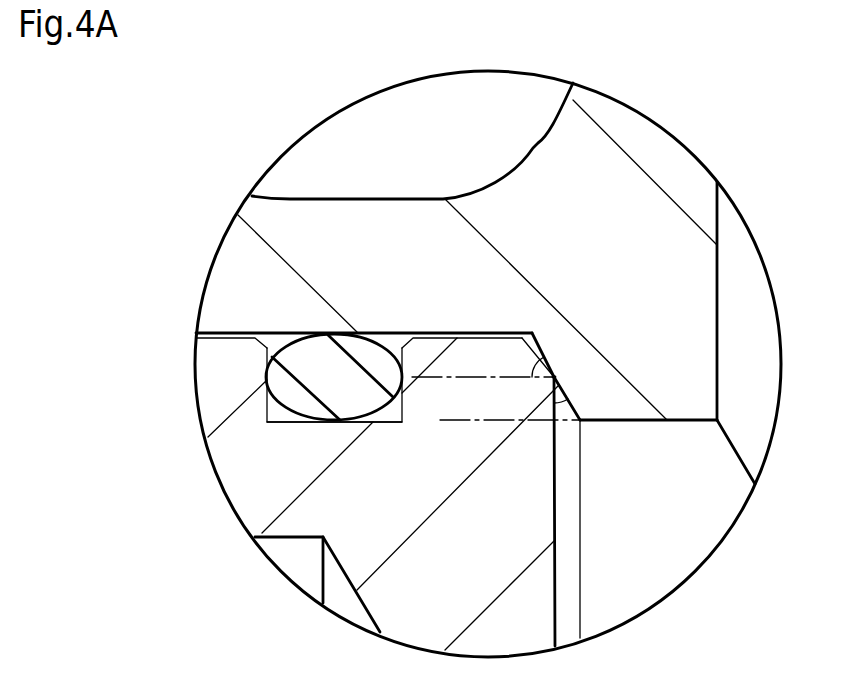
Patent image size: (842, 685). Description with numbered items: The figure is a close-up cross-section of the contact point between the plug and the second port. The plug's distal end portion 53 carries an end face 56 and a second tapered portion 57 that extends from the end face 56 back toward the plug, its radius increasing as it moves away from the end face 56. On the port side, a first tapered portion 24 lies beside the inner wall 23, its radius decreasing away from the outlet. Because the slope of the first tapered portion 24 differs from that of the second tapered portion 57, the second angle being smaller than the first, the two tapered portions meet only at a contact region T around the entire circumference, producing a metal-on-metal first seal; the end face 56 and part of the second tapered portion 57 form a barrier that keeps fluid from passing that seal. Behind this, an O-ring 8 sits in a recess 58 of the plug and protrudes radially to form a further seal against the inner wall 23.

The O-ring 8 is at (373, 334).
The inner wall 23 is at (392, 338).
The distal end portion 53 is at (468, 345).
The second tapered portion 57 is at (518, 337).
The recess 58 is at (388, 418).
The first tapered portion 24 is at (562, 393).
The end face 56 is at (557, 482).
The contact region T is at (560, 375).